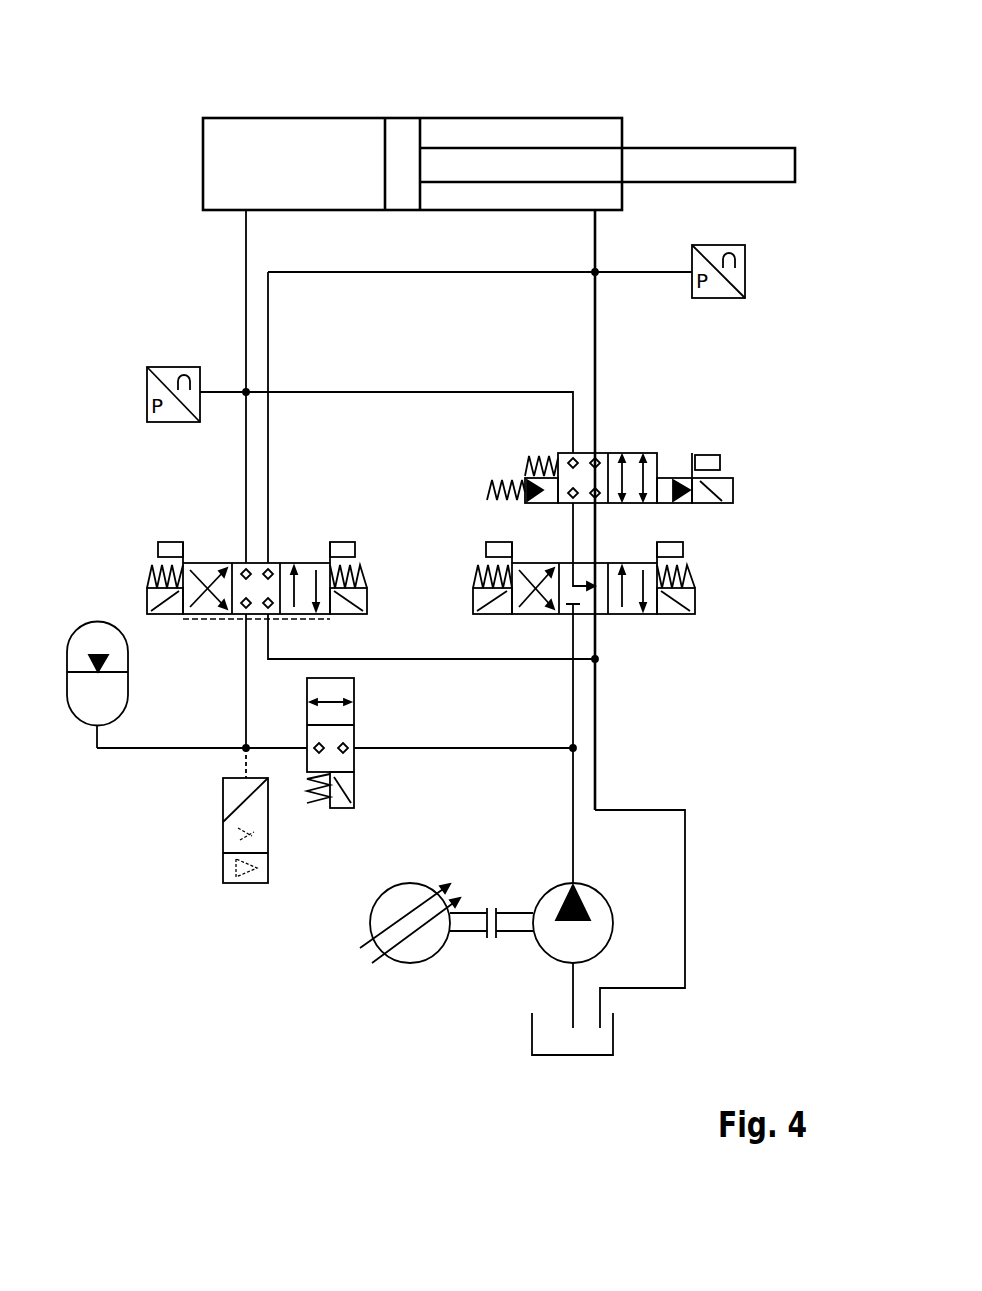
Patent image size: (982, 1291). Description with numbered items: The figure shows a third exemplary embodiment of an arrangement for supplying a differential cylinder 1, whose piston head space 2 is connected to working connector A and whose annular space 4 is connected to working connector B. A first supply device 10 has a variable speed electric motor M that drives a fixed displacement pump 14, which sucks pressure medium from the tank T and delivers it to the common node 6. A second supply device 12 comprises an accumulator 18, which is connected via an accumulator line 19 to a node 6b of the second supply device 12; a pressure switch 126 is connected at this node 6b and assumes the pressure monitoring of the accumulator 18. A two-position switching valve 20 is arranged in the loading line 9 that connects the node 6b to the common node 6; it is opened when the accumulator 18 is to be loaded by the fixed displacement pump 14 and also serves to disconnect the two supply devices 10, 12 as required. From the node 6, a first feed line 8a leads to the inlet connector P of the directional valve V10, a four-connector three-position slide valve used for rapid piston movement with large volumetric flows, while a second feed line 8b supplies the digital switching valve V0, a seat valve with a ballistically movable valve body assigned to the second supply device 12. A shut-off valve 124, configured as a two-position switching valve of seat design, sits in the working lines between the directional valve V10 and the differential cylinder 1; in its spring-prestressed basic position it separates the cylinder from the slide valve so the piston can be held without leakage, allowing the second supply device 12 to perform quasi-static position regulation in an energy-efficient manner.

The differential cylinder 1 is at (409, 104).
The piston head space 2 is at (412, 164).
The annular space 4 is at (535, 138).
The shut-off valve 124 is at (512, 458).
The digital switching valve V0 is at (292, 532).
The directional valve V10 is at (710, 571).
The accumulator line 19 is at (163, 747).
The second feed line 8b is at (243, 700).
The loading line 9 is at (272, 747).
The first feed line 8a is at (573, 709).
The node 6 is at (573, 750).
The accumulator 18 is at (86, 700).
The node of the second supply device 6b is at (246, 750).
The second supply device 12 is at (118, 788).
The pressure switch 126 is at (218, 868).
The 2/2-way switching valve 20 is at (355, 785).
The fixed displacement pump 14 is at (592, 940).
The first supply device 10 is at (452, 993).